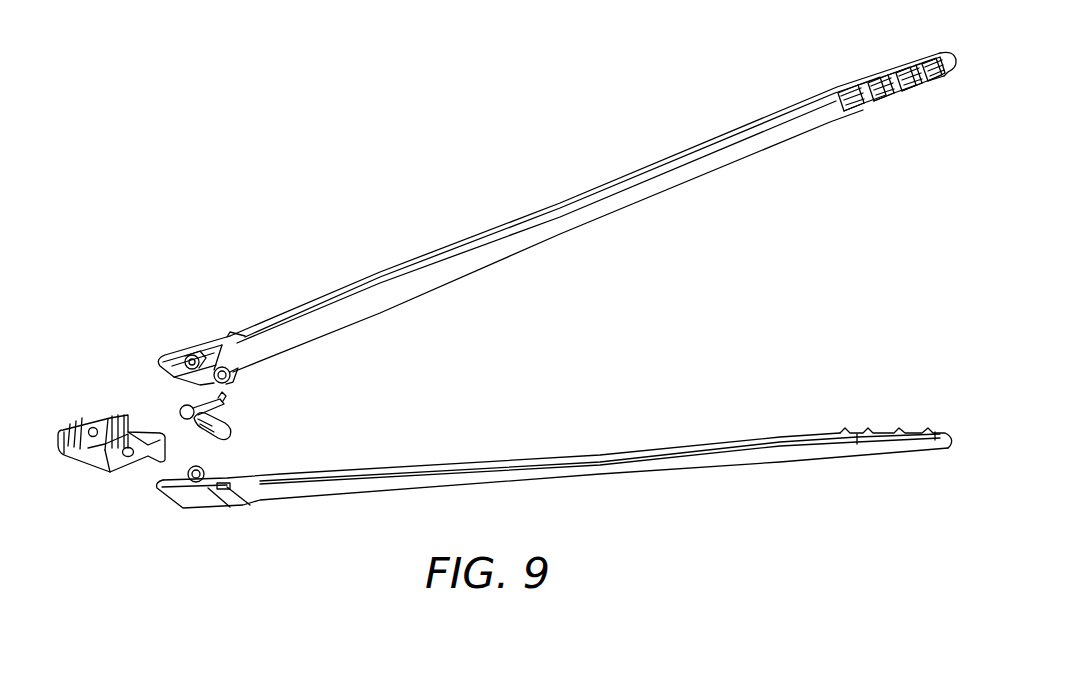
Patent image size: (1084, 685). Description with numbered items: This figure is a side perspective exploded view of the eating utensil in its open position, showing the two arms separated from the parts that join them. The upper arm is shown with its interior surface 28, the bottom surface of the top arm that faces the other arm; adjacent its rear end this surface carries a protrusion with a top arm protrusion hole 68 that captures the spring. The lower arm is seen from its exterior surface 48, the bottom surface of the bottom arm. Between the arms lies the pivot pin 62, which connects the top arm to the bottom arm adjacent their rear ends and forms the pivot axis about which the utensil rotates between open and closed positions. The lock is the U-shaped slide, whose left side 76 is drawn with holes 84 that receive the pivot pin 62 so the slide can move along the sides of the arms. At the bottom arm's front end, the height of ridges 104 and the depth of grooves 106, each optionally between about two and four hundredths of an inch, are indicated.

The interior surface 28 is at (405, 288).
The exterior surface 48 is at (493, 480).
The pivot pin 62 is at (217, 438).
The top arm protrusion hole 68 is at (193, 360).
The U-shaped slide left side 76 is at (103, 458).
The U-shaped slide holes 84 is at (93, 428).
The height of ridges 104 is at (842, 383).
The depth of grooves 106 is at (917, 483).